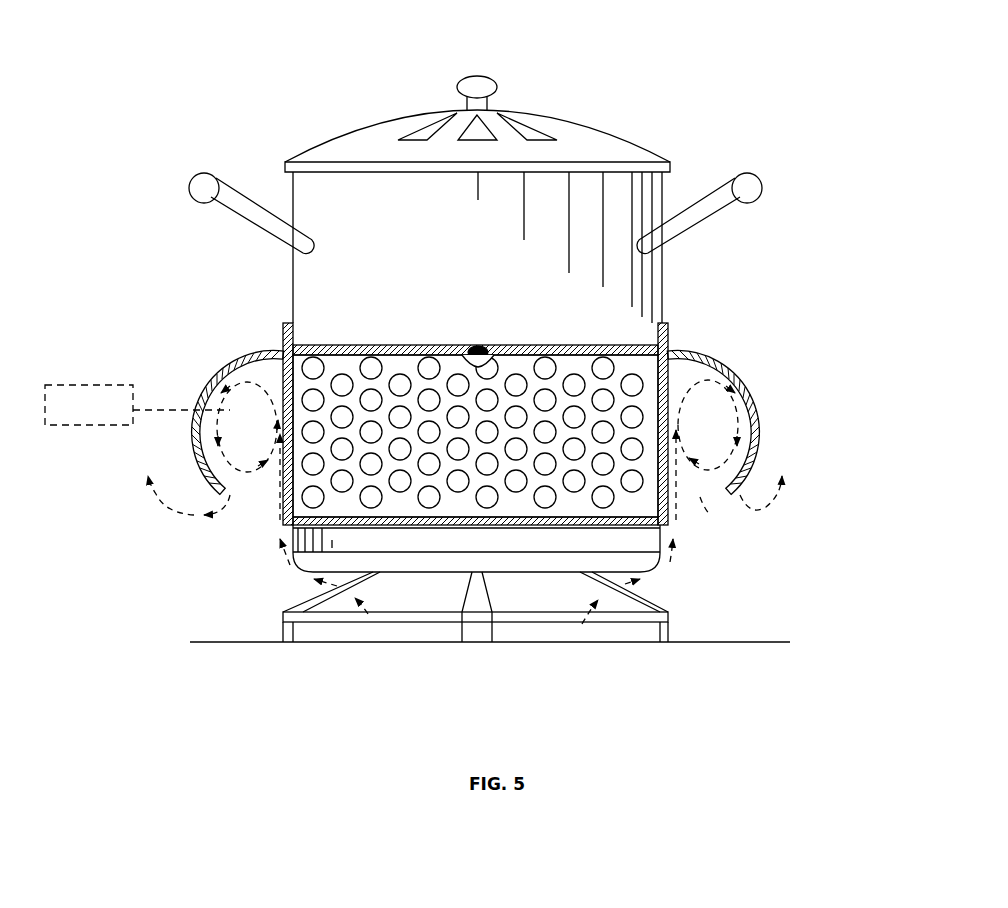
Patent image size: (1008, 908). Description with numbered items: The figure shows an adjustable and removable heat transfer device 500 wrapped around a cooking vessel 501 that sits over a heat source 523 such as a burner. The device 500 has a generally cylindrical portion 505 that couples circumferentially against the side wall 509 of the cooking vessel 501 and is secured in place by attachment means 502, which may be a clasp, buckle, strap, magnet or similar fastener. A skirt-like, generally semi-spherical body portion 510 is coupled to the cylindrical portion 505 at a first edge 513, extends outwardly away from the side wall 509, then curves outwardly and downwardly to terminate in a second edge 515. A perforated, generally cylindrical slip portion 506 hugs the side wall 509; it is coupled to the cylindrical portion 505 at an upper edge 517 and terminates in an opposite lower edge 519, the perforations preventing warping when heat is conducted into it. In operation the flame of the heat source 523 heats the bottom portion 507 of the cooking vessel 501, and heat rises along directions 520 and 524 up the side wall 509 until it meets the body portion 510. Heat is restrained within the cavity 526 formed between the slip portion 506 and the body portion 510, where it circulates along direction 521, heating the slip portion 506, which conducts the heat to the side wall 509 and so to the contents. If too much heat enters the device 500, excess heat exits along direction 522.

The adjustable and removable device 500 is at (126, 250).
The cooking vessel 501 is at (376, 100).
The attachment means 502 is at (479, 345).
The cylindrical portion 505 is at (668, 325).
The slip portion 506 is at (283, 497).
The bottom portion 507 is at (630, 560).
The side wall 509 is at (657, 193).
The body portion 510 is at (758, 393).
The first edge 513 is at (668, 343).
The second edge 515 is at (735, 491).
The edge of slip portion 517 is at (545, 343).
The edge of slip portion 519 is at (670, 527).
The direction of heat flow 520 is at (300, 572).
The direction of heat circulation 521 is at (232, 383).
The direction of heat exit 522 is at (157, 495).
The heat source 523 is at (405, 583).
The direction of heat flow 524 is at (655, 573).
The cavity 526 is at (137, 405).